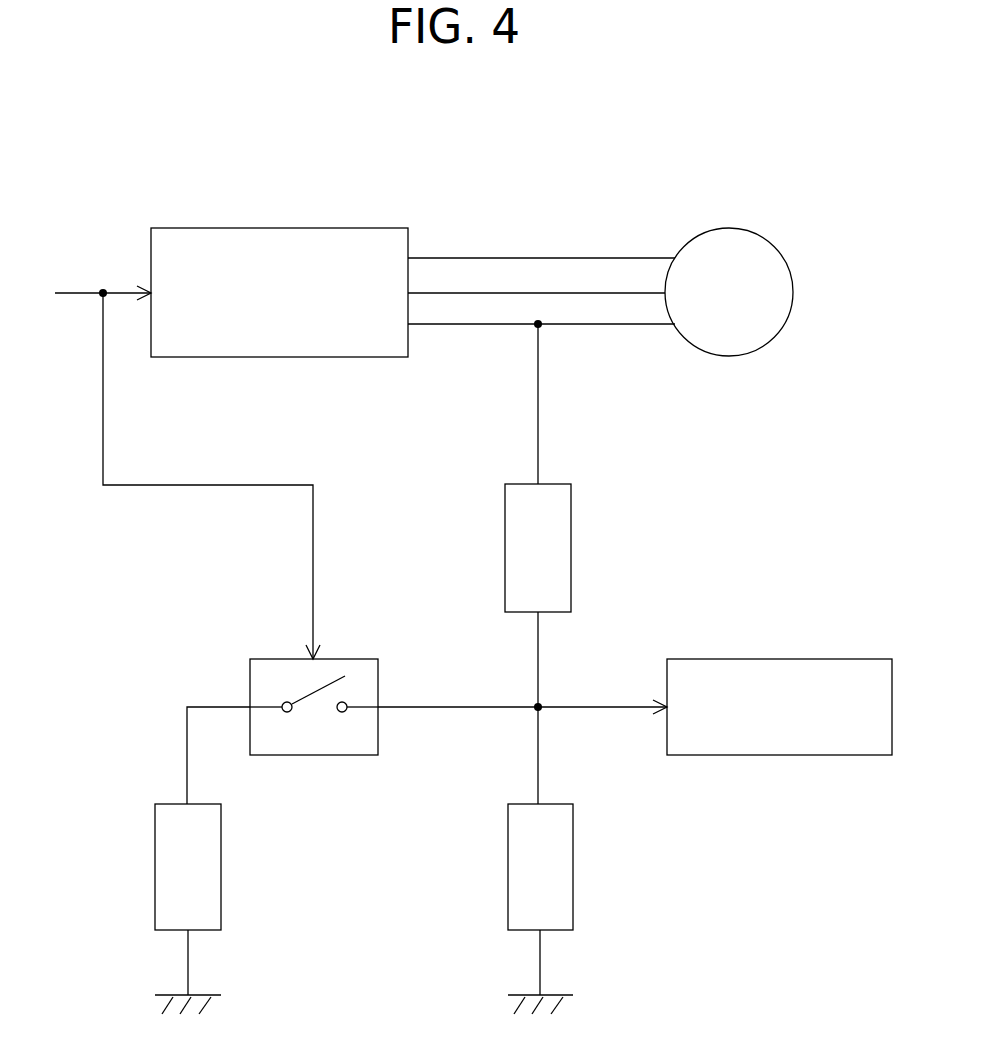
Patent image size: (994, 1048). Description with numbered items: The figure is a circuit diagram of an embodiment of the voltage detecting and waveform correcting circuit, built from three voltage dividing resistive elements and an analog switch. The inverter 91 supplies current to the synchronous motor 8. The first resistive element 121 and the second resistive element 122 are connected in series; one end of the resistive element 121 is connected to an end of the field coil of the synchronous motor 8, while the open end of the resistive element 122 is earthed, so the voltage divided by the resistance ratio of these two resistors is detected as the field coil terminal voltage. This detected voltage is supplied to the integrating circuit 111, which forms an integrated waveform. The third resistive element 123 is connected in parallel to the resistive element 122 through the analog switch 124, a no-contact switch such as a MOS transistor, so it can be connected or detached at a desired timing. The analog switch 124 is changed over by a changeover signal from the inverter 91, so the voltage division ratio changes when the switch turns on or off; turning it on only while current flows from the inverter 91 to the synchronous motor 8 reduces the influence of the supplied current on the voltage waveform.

The inverter 91 is at (358, 228).
The synchronous motor 8 is at (728, 228).
The resistive element 121 is at (571, 524).
The resistive element 122 is at (573, 850).
The resistive element 123 is at (221, 850).
The analog switch 124 is at (345, 659).
The integrating circuit 111 is at (778, 659).